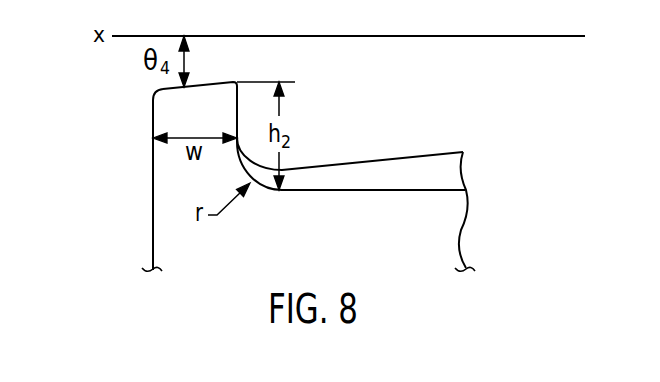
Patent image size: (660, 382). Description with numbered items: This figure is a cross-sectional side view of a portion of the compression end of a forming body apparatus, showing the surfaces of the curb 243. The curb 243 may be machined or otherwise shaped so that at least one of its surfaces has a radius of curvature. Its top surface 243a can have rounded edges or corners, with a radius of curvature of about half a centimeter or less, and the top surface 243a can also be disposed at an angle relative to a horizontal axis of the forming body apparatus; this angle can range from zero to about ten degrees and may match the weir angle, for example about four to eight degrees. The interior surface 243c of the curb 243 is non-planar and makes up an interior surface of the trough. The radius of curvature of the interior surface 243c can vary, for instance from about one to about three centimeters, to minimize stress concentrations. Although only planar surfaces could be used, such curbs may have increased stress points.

The curb 243 is at (215, 121).
The top surface 243a is at (167, 91).
The interior surface 243c is at (238, 99).